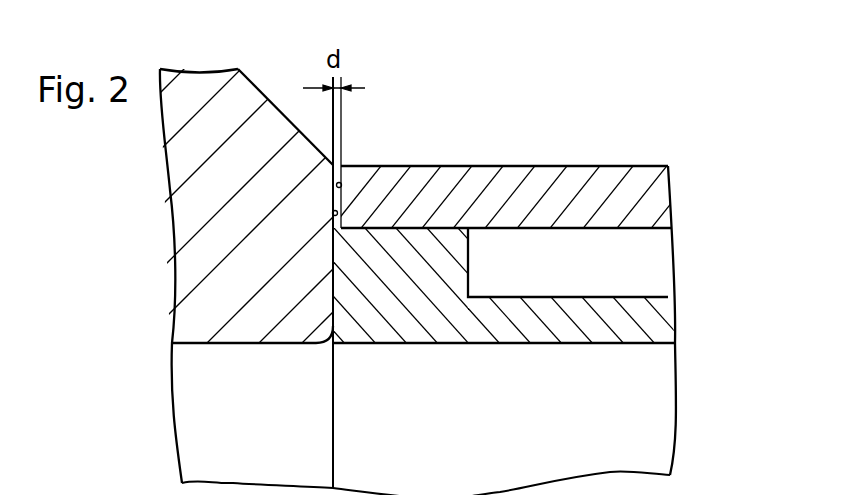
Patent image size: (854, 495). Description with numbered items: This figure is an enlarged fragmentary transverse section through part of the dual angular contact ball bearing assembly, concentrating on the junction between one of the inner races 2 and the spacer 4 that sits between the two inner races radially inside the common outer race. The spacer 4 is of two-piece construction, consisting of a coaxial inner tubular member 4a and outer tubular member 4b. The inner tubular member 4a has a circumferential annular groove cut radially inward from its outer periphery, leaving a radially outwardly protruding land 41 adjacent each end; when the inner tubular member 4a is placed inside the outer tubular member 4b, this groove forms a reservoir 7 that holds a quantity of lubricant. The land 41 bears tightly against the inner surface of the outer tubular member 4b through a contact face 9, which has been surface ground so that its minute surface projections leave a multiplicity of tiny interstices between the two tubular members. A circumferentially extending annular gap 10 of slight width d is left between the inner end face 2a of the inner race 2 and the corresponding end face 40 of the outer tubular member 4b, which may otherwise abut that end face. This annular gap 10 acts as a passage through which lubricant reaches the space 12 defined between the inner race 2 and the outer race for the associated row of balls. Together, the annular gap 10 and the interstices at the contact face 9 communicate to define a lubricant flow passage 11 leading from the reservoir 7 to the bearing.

The inner race 2 is at (205, 240).
The inner end face 2a is at (333, 212).
The space 12 is at (288, 105).
The spacer 4 is at (766, 170).
The inner tubular member 4a is at (643, 325).
The outer tubular member 4b is at (643, 198).
The land 41 is at (420, 245).
The reservoir 7 is at (555, 292).
The contact face 9 is at (380, 227).
The annular gap 10 is at (343, 170).
The lubricant flow passage 11 is at (462, 75).
The end face 40 is at (340, 185).